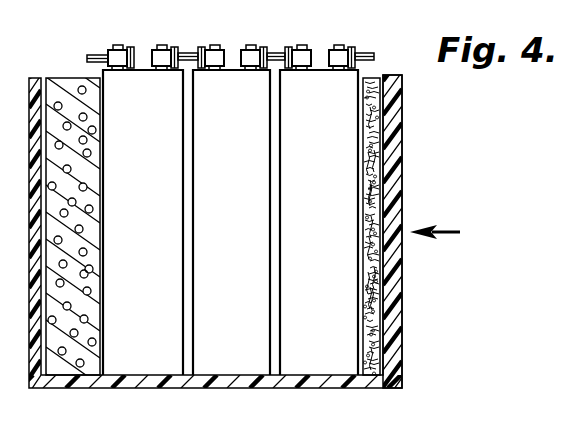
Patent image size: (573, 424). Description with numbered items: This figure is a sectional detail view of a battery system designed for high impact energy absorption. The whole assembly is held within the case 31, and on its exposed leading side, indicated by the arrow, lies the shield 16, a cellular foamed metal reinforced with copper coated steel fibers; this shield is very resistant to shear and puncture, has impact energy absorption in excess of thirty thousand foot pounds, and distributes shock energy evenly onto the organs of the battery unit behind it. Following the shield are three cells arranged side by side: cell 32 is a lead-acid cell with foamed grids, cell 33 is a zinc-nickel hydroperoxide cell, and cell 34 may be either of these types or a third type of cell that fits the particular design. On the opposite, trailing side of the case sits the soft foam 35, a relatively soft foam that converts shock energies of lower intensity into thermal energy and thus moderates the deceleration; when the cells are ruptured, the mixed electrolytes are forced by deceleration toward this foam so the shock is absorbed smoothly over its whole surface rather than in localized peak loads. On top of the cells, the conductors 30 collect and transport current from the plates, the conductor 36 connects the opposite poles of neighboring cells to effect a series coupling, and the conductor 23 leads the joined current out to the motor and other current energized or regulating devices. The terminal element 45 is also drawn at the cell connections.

The shield 16 is at (375, 78).
The conductor 23 is at (98, 55).
The conductors 30 is at (117, 48).
The case 31 is at (401, 285).
The cell 32 is at (328, 365).
The cell 33 is at (226, 366).
The cell 34 is at (158, 367).
The soft foam 35 is at (84, 375).
The conductor 36 is at (188, 57).
The terminal flange 45 is at (134, 63).